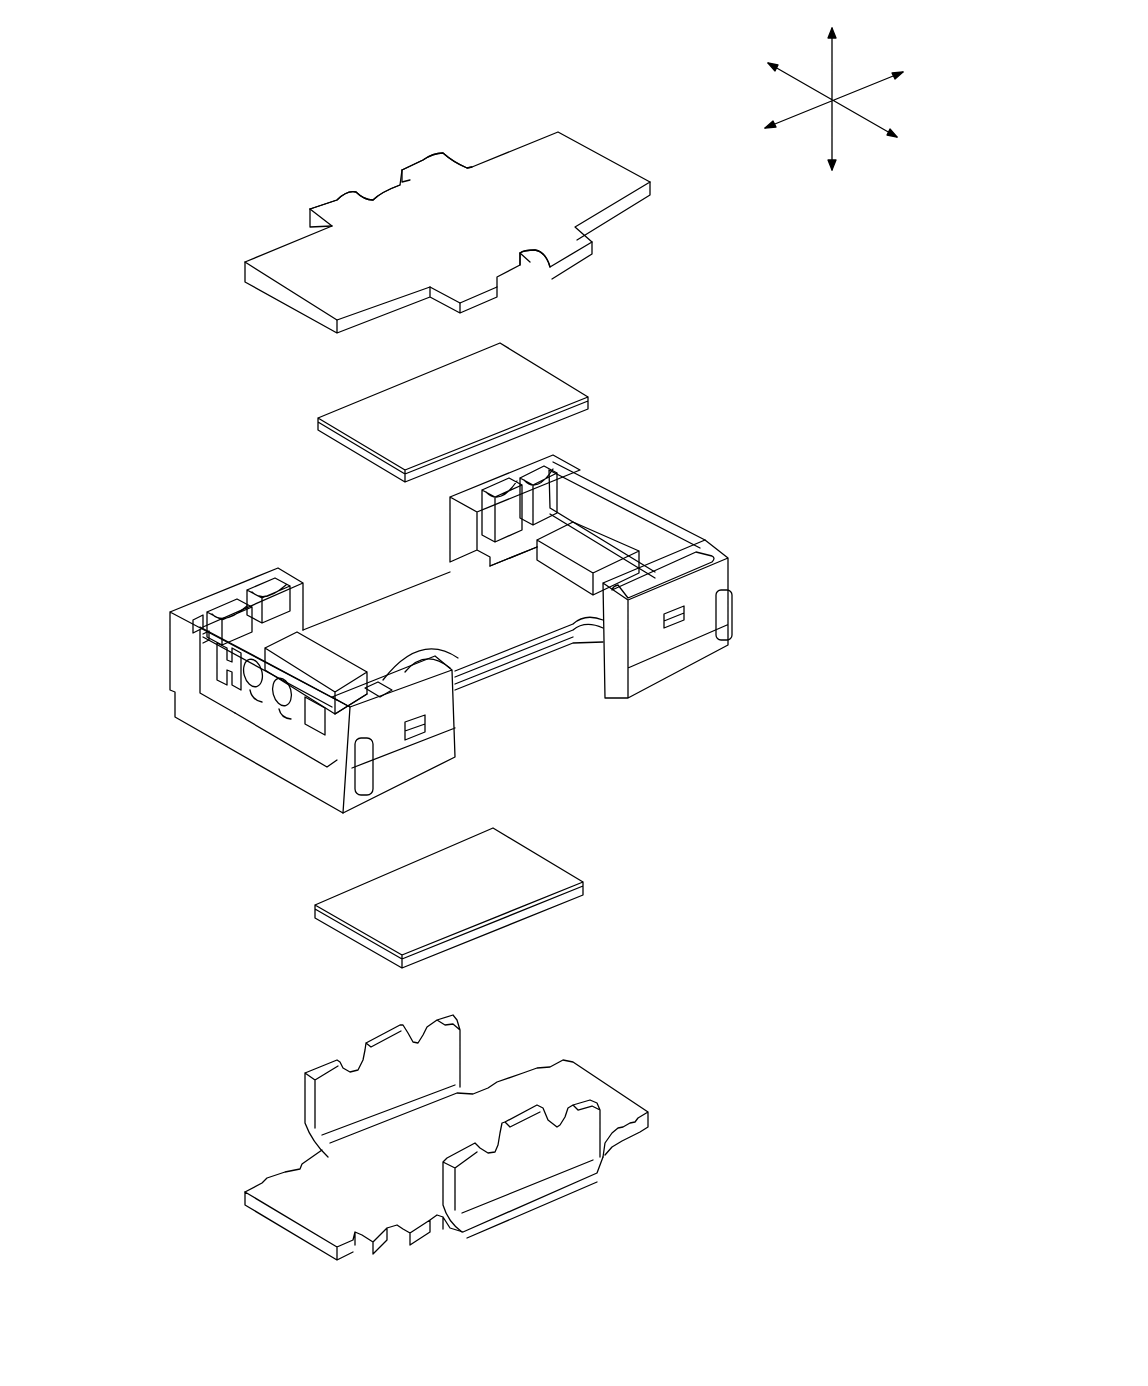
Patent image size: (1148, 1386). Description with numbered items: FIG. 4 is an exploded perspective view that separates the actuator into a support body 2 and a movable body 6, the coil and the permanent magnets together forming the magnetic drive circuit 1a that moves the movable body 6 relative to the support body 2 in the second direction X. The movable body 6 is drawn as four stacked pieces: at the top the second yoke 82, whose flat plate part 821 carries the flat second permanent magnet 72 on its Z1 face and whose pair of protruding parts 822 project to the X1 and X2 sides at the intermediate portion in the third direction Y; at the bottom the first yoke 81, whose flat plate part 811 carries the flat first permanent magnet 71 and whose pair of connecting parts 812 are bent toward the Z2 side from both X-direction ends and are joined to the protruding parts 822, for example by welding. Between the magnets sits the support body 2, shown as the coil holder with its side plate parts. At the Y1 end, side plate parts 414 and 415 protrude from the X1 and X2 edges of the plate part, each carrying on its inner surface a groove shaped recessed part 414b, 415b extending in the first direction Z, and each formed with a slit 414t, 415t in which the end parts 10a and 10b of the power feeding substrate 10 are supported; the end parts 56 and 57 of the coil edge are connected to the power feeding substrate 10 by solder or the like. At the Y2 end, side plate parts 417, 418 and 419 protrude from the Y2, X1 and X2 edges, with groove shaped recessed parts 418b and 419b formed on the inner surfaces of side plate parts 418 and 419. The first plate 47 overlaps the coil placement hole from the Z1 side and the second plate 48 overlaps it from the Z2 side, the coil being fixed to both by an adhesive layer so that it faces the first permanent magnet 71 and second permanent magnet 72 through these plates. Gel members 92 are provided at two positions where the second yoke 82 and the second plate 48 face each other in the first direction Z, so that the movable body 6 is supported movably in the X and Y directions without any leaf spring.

The magnetic drive circuit 1a is at (176, 161).
The support body 2 is at (146, 724).
The movable body 6 is at (178, 309).
The second yoke 82 is at (308, 278).
The flat plate part 821 is at (480, 183).
The protruding parts 822 is at (423, 165).
The second permanent magnet 72 is at (306, 428).
The first permanent magnet 71 is at (308, 930).
The first yoke 81 is at (296, 1164).
The flat plate part 811 is at (417, 1197).
The connecting parts 812 is at (455, 1050).
The second plate 48 is at (403, 620).
The side plate part 415 is at (220, 625).
The groove shaped recessed part 415b is at (270, 610).
The slit 415t is at (200, 620).
The power feeding substrate 10 is at (205, 704).
The end part 10a is at (333, 690).
The end part 10b is at (205, 632).
The end part of coil edge 57 is at (247, 703).
The end part of coil edge 56 is at (273, 720).
The gel member 92 is at (313, 655).
The side plate part 414 is at (455, 763).
The slit 414t is at (343, 713).
The groove shaped recessed part 414b is at (460, 675).
The first plate 47 is at (557, 653).
The side plate part 419 is at (560, 466).
The groove shaped recessed part 419b is at (553, 495).
The side plate part 417 is at (630, 493).
The side plate part 418 is at (712, 653).
The groove shaped recessed part 418b is at (687, 560).